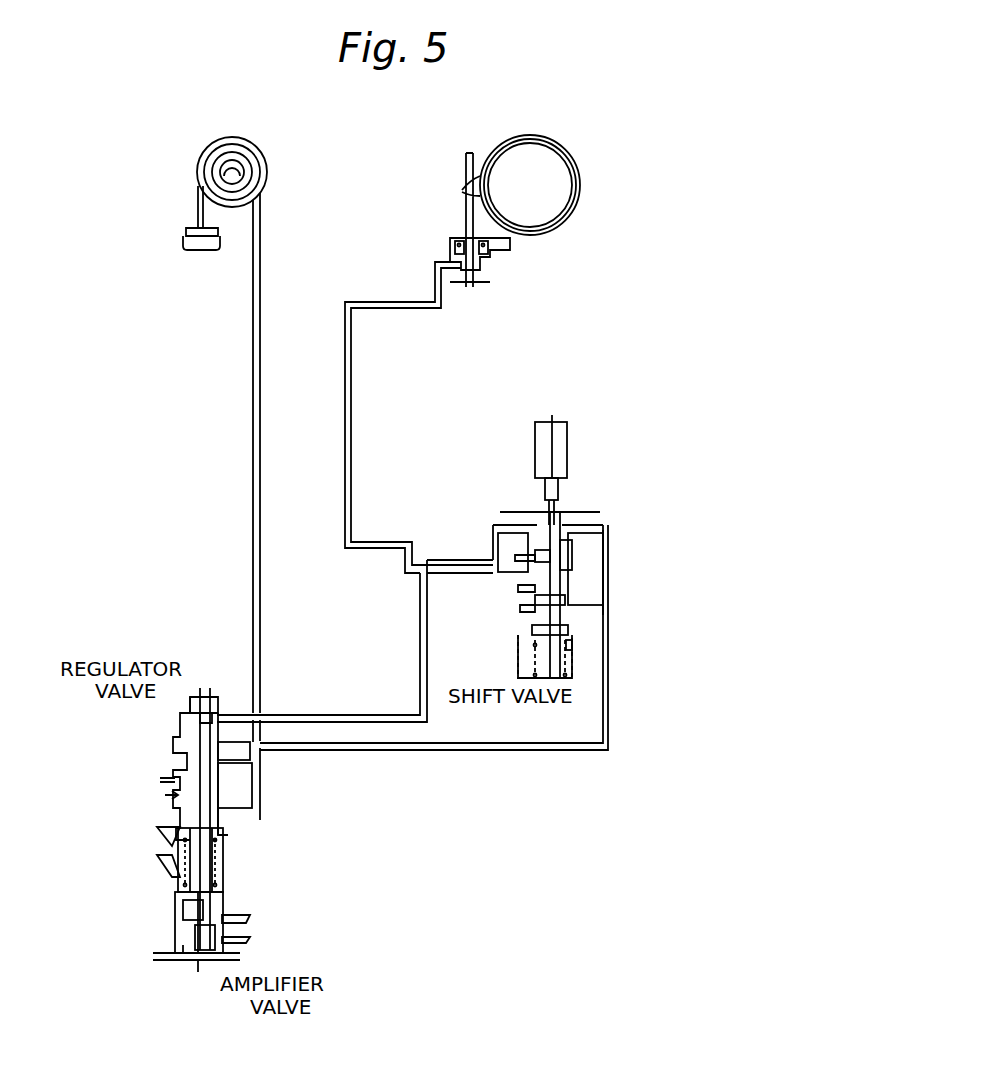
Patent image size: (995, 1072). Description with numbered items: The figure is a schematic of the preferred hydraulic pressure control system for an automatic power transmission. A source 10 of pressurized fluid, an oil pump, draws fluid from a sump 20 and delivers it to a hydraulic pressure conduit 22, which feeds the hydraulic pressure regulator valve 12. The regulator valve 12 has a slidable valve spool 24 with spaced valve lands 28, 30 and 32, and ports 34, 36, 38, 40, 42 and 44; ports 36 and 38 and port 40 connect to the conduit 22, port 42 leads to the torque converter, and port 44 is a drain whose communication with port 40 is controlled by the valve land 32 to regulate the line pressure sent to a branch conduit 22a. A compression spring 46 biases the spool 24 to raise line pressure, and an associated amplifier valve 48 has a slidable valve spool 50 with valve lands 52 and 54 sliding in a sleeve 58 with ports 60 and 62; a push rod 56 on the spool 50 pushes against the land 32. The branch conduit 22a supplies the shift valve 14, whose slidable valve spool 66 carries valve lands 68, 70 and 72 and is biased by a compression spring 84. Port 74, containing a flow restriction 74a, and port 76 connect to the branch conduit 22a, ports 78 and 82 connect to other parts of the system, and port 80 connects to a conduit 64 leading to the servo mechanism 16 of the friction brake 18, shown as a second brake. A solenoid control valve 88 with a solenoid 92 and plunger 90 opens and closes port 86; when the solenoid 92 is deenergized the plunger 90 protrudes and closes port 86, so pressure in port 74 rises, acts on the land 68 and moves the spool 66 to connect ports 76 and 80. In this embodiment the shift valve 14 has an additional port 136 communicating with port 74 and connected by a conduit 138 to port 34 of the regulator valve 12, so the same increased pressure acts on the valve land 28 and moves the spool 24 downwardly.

The source of pressurized fluid 10 is at (244, 164).
The sump 20 is at (192, 228).
The hydraulic pressure conduit 22 is at (250, 358).
The friction brake 18 is at (541, 161).
The servo mechanism 16 is at (496, 270).
The conduit 64 is at (352, 430).
The conduit 138 is at (320, 714).
The branch conduit 22a is at (520, 743).
The solenoid control valve 88 is at (568, 446).
The solenoid 92 is at (540, 425).
The plunger 90 is at (560, 486).
The port 86 is at (556, 517).
The shift valve 14 is at (628, 494).
The additional port 136 is at (532, 530).
The flow restriction 74a is at (592, 530).
The valve land 68 is at (566, 560).
The port 74 is at (580, 560).
The port 76 is at (576, 596).
The port 78 is at (525, 556).
The port 80 is at (535, 578).
The slidable valve spool 66 is at (538, 590).
The valve land 72 is at (570, 622).
The valve land 70 is at (525, 610).
The port 82 is at (527, 620).
The compression spring 84 is at (566, 672).
The hydraulic pressure regulator valve 12 is at (104, 772).
The port 34 is at (212, 708).
The valve land 28 is at (182, 736).
The slidable valve spool 24 is at (172, 812).
The port 42 is at (172, 778).
The valve land 30 is at (173, 793).
The port 36 is at (252, 750).
The port 38 is at (242, 781).
The port 40 is at (232, 814).
The drain 44 is at (162, 832).
The valve land 32 is at (167, 842).
The amplifier valve 48 is at (278, 904).
The push rod 56 is at (216, 861).
The compression spring 46 is at (220, 881).
The sleeve 58 is at (226, 896).
The valve land 52 is at (186, 905).
The slidable valve spool 50 is at (180, 935).
The port 60 is at (252, 919).
The port 62 is at (252, 940).
The valve land 54 is at (186, 955).